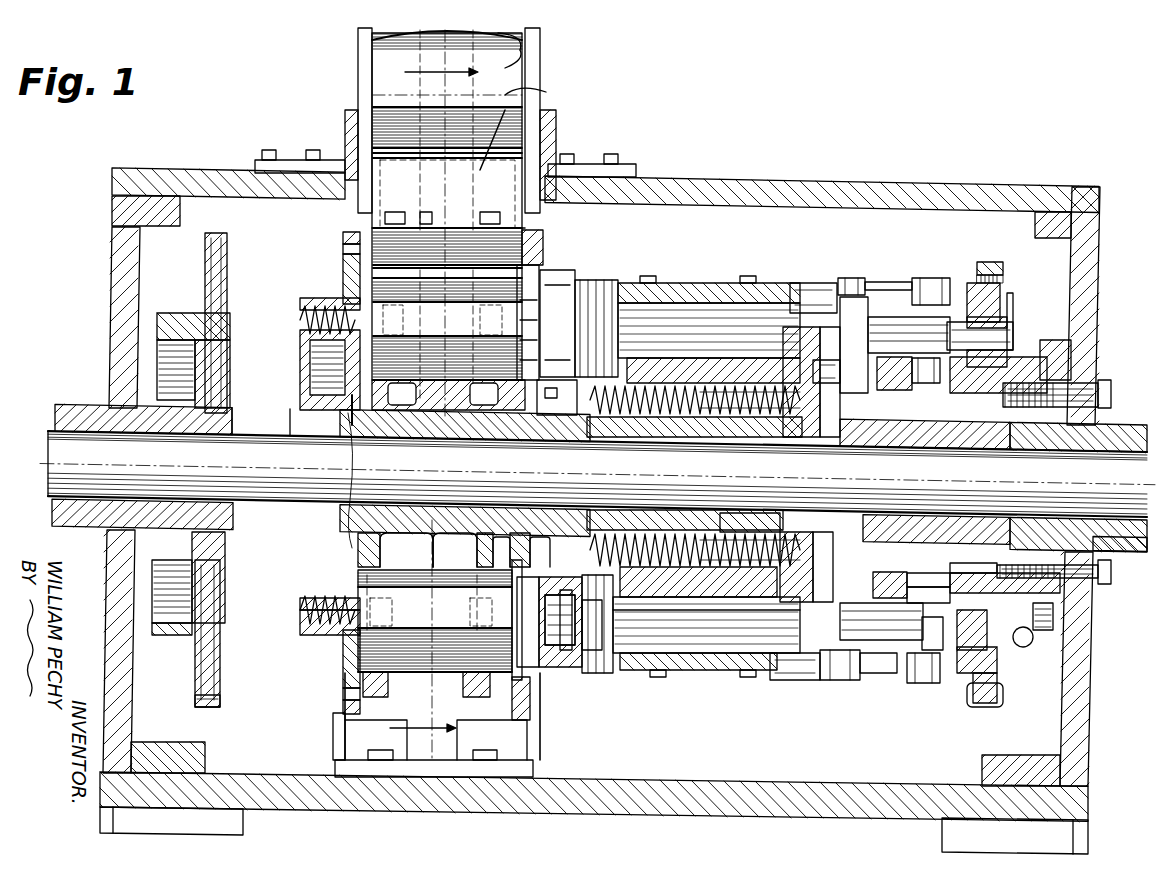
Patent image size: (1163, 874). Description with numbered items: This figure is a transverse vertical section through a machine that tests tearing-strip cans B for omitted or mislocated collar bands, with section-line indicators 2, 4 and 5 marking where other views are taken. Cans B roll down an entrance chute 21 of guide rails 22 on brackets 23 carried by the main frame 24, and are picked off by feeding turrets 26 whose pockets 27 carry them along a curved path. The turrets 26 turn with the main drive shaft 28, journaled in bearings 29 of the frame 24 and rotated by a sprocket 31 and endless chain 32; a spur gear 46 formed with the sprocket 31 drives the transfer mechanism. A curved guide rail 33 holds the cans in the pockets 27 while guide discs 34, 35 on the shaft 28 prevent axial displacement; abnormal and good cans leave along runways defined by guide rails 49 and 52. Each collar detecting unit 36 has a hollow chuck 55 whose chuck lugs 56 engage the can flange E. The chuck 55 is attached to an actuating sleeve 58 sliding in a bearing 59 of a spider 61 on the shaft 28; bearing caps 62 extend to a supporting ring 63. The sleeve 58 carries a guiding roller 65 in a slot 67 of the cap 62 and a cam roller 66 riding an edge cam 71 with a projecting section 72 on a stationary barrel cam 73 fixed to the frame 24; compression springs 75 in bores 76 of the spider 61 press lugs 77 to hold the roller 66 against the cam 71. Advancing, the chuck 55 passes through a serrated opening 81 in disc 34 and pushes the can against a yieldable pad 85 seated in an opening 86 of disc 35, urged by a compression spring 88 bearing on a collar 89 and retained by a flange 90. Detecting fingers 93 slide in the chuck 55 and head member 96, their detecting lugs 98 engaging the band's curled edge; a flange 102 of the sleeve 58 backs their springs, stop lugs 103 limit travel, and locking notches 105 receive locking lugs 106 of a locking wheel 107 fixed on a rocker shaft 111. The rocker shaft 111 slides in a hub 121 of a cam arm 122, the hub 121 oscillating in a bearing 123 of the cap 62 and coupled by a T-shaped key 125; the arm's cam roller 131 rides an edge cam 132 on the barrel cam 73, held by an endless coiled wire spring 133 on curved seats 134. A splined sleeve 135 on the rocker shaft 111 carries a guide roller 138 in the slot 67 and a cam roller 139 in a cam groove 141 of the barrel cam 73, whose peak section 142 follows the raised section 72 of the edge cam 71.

The section line 2- 2 is at (425, 401).
The section line 4- 4 is at (935, 300).
The section line 5- 5 is at (1060, 370).
The can B is at (473, 349).
The flange E is at (501, 294).
The entrance chute 21 is at (372, 42).
The guide rails 22 is at (365, 76).
The brackets 23 is at (290, 160).
The frame 24 is at (782, 189).
The feeding turrets 26 is at (425, 394).
The can receiving and propelling pockets 27 is at (383, 560).
The main drive shaft 28 is at (58, 462).
The bearings 29 is at (70, 405).
The sprocket 31 is at (218, 630).
The endless chain 32 is at (197, 695).
The curved guide rail 33 is at (525, 224).
The guide disc 34 is at (543, 245).
The auxiliary guide disc 35 is at (350, 235).
The collar detecting units 36 is at (616, 274).
The spur gear 46 is at (172, 318).
The guide rails 49 is at (440, 715).
The guide rails 52 is at (430, 690).
The hollow cylindrical chuck 55 is at (590, 290).
The chuck lugs 56 is at (560, 290).
The actuating sleeve 58 is at (685, 310).
The bearing 59 is at (712, 372).
The spider 61 is at (732, 520).
The bearing caps 62 is at (715, 296).
The supporting ring 63 is at (990, 707).
The guiding roller 65 is at (850, 278).
The cam roller 66 is at (850, 372).
The longitudinal slot 67 is at (808, 286).
The edge cam 71 is at (915, 573).
The projecting cam section 72 is at (848, 410).
The stationary hollow barrel cam 73 is at (998, 390).
The compression springs 75 is at (800, 464).
The bores 76 is at (672, 528).
The lugs 77 is at (714, 470).
The serrated opening 81 is at (557, 397).
The yieldable pad 85 is at (346, 263).
The circular openings 86 is at (357, 471).
The compression springs 88 is at (345, 308).
The collar 89 is at (300, 368).
The flange 90 is at (346, 248).
The detecting fingers 93 is at (520, 315).
The head member 96 is at (520, 605).
The detecting lug 98 is at (480, 686).
The flange 102 is at (640, 290).
The stop lugs 103 is at (550, 620).
The locking notch 105 is at (568, 668).
The locking lugs 106 is at (630, 632).
The locking wheel 107 is at (580, 620).
The rocker shaft 111 is at (1015, 310).
The hub 121 is at (1013, 330).
The cam arm 122 is at (997, 660).
The bearing 123 is at (1000, 300).
The T-shaped key 125 is at (952, 511).
The cam roller 131 is at (1060, 593).
The edge cam 132 is at (1060, 577).
The endless coiled wire spring 133 is at (1039, 645).
The curved seats 134 is at (1055, 630).
The splined sleeve 135 is at (880, 322).
The guide roller 138 is at (975, 262).
The cam roller 139 is at (895, 390).
The cam groove 141 is at (930, 383).
The peak section 142 is at (888, 473).